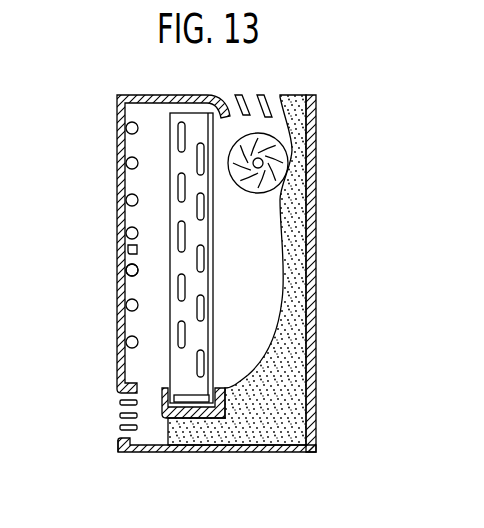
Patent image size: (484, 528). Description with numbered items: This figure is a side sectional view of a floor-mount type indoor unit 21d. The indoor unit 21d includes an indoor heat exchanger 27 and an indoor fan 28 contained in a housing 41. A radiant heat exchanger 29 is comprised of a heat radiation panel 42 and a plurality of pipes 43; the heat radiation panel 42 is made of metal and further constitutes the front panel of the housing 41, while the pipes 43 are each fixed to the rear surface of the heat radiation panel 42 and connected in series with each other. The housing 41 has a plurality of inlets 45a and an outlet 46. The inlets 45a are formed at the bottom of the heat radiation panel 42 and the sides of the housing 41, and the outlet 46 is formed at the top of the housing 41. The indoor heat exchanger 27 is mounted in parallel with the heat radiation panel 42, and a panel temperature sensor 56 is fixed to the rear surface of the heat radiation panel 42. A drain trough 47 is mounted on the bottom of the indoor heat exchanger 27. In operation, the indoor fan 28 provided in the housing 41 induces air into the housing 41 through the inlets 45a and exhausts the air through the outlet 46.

The indoor unit 21d is at (313, 223).
The indoor heat exchanger 27 is at (205, 328).
The indoor fan 28 is at (283, 147).
The radiant heat exchanger 29 is at (118, 258).
The housing 41 is at (305, 93).
The heat radiation panel 42 is at (122, 179).
The pipes 43 is at (124, 160).
The inlets 45a is at (118, 398).
The outlet 46 is at (247, 93).
The drain trough 47 is at (167, 412).
The panel temperature sensor 56 is at (126, 251).